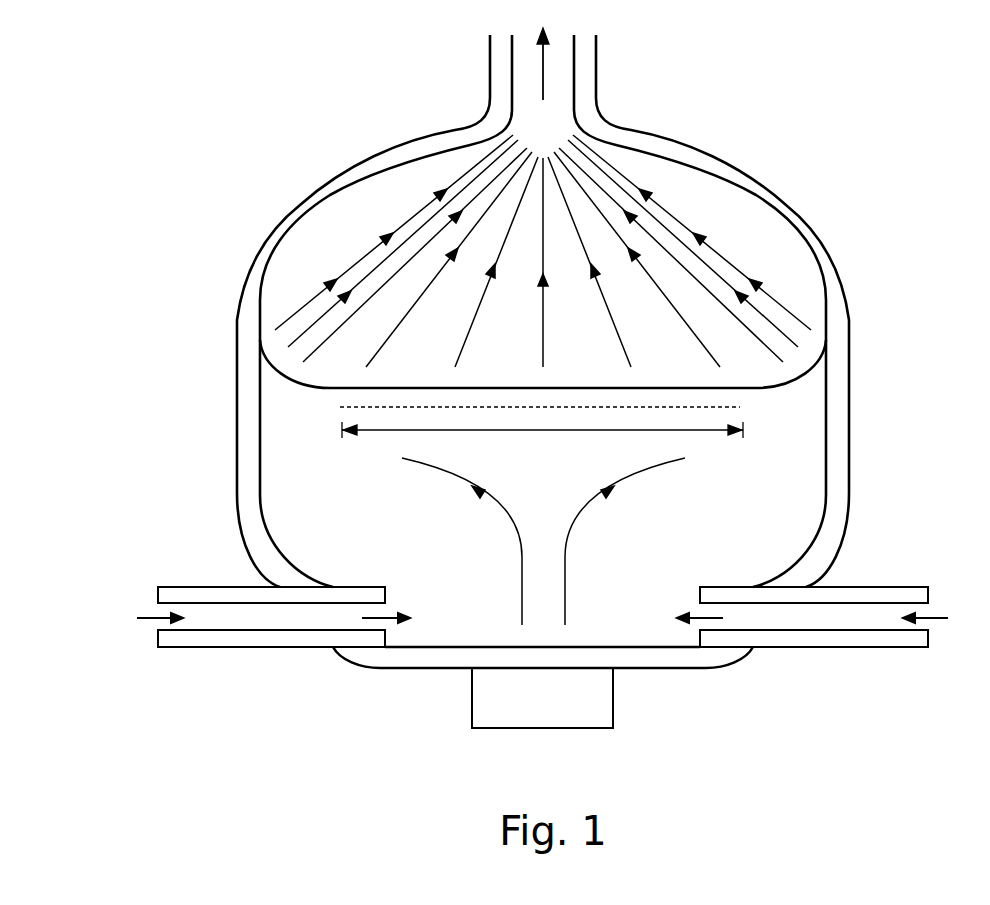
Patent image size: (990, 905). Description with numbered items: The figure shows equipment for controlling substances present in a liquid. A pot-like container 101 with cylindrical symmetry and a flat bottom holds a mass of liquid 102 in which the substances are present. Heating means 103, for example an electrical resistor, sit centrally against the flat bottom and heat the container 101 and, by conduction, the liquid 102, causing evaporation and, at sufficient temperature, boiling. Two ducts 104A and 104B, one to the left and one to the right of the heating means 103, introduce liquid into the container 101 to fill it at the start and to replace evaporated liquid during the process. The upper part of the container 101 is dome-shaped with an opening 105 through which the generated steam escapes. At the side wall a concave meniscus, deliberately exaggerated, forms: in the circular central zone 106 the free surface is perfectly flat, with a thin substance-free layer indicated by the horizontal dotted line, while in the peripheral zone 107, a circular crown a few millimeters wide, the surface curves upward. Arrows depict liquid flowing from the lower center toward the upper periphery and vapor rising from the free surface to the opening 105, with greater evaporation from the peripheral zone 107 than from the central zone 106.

The container 101 is at (248, 430).
The liquid 102 is at (360, 523).
The heating means 103 is at (570, 703).
The duct 104A is at (258, 635).
The duct 104B is at (840, 637).
The opening 105 is at (545, 120).
The central zone 106 is at (543, 541).
The peripheral zone 107 is at (542, 425).